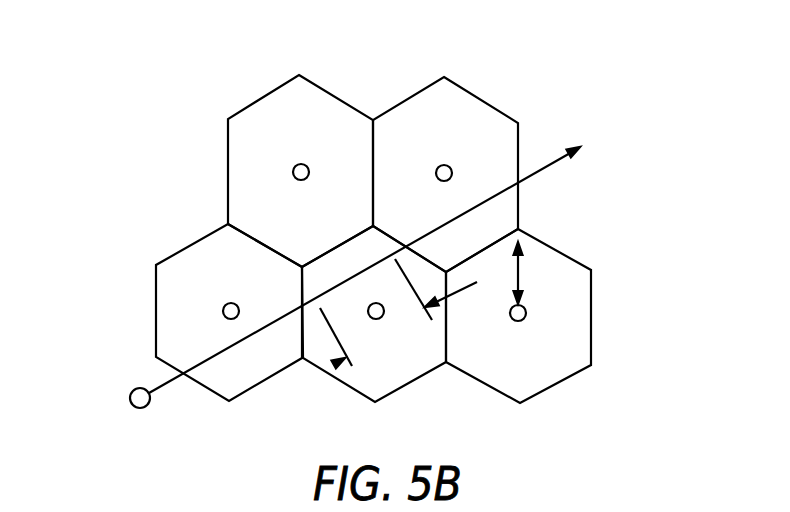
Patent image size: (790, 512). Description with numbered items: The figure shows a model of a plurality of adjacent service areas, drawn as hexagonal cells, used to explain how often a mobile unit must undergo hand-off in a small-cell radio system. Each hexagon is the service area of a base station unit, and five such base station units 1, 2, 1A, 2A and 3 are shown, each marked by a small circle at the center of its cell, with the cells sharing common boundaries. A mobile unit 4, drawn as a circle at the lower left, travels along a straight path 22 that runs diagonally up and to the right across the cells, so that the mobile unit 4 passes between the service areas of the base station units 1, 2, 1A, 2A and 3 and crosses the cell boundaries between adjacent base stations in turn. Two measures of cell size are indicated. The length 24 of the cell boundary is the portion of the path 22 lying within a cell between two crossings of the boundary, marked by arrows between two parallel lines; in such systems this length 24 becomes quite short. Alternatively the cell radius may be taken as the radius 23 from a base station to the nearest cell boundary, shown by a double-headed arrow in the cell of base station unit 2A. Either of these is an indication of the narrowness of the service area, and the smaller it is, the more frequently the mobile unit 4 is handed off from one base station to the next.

The base station unit 1 is at (224, 305).
The base station unit 1A is at (458, 130).
The base station unit 2 is at (300, 165).
The base station unit 2A is at (518, 321).
The base station unit 3 is at (376, 319).
The mobile unit 4 is at (133, 405).
The path 22 is at (535, 177).
The radius 23 is at (520, 272).
The length of the cell boundary 24 is at (338, 362).